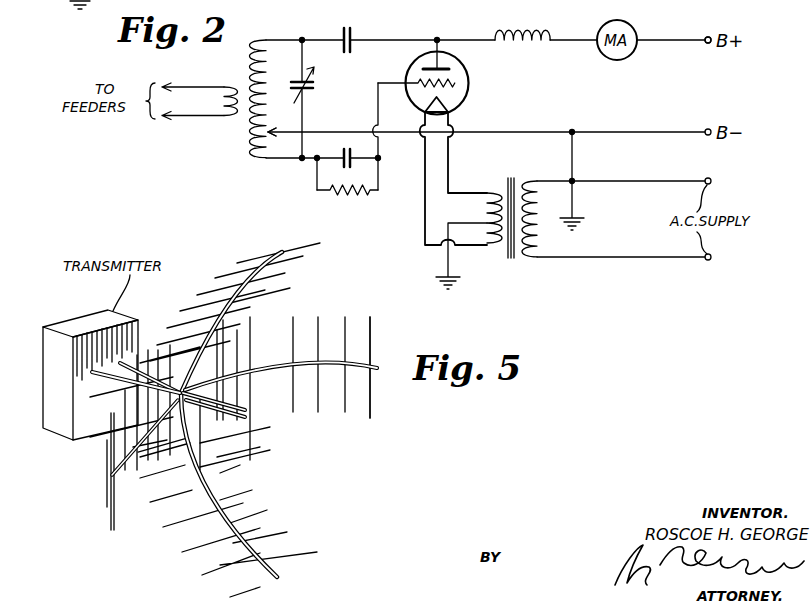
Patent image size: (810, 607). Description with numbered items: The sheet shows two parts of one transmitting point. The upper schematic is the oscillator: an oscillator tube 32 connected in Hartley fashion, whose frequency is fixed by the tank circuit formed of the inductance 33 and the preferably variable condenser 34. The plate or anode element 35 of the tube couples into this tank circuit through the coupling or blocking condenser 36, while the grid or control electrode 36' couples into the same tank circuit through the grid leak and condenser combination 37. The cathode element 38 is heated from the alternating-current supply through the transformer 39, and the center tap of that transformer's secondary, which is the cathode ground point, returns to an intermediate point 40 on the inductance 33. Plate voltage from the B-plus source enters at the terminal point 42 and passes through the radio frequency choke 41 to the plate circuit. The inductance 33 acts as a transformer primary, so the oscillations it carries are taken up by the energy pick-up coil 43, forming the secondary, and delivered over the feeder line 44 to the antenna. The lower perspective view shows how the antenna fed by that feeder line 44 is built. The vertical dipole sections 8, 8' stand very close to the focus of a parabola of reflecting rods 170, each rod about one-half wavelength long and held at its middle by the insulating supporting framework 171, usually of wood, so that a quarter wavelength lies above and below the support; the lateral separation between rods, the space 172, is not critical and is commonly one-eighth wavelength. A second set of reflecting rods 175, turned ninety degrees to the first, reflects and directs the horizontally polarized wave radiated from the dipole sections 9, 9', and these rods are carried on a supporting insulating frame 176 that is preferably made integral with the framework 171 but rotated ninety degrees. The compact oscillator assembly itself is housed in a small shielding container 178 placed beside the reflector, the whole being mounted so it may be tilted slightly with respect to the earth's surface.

In FIG. 2, the oscillator tube 32 is at (414, 99).
In FIG. 2, the inductance 33 is at (267, 81).
In FIG. 2, the condenser 34 is at (313, 89).
In FIG. 2, the plate or anode element 35 is at (424, 69).
In FIG. 2, the coupling or blocking condenser 36 is at (358, 53).
In FIG. 2, the grid or control electrode 36' is at (444, 78).
In FIG. 2, the grid leak and condenser combination 37 is at (330, 180).
In FIG. 2, the cathode element 38 is at (452, 100).
In FIG. 2, the transformer 39 is at (505, 189).
In FIG. 2, the intermediate point 40 is at (268, 132).
In FIG. 2, the radio frequency choke 41 is at (525, 46).
In FIG. 2, the terminal point 42 is at (706, 43).
In FIG. 2, the energy pick-up coil 43 is at (230, 86).
In FIG. 2, the feeder line 44 is at (179, 86).
In FIG. 5, the dipole section 8 is at (190, 361).
In FIG. 5, the dipole section 8' is at (236, 429).
In FIG. 5, the dipole section 9 is at (165, 418).
In FIG. 5, the dipole section 9' is at (243, 419).
In FIG. 5, the reflecting rods 170 is at (347, 330).
In FIG. 5, the supporting framework 171 is at (303, 363).
In FIG. 5, the space 172 is at (358, 392).
In FIG. 5, the reflecting rods 175 is at (266, 254).
In FIG. 5, the supporting insulating frame 176 is at (260, 527).
In FIG. 5, the container 178 is at (92, 313).